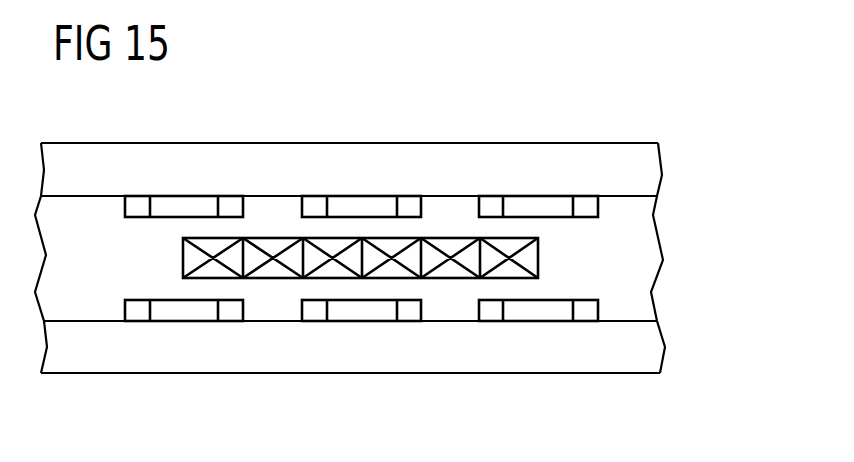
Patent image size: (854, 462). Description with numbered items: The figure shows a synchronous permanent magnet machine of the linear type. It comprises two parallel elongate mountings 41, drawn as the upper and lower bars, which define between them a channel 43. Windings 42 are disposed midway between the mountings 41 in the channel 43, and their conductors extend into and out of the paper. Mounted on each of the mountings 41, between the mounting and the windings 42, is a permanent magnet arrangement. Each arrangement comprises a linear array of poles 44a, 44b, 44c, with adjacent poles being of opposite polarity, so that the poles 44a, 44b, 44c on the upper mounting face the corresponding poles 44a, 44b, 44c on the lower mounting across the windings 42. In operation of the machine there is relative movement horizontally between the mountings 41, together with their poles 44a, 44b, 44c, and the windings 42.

The elongate mounting 41 is at (651, 175).
The windings 42 is at (540, 255).
The channel 43 is at (651, 223).
The pole 44a is at (178, 205).
The pole 44b is at (352, 205).
The pole 44c is at (538, 205).